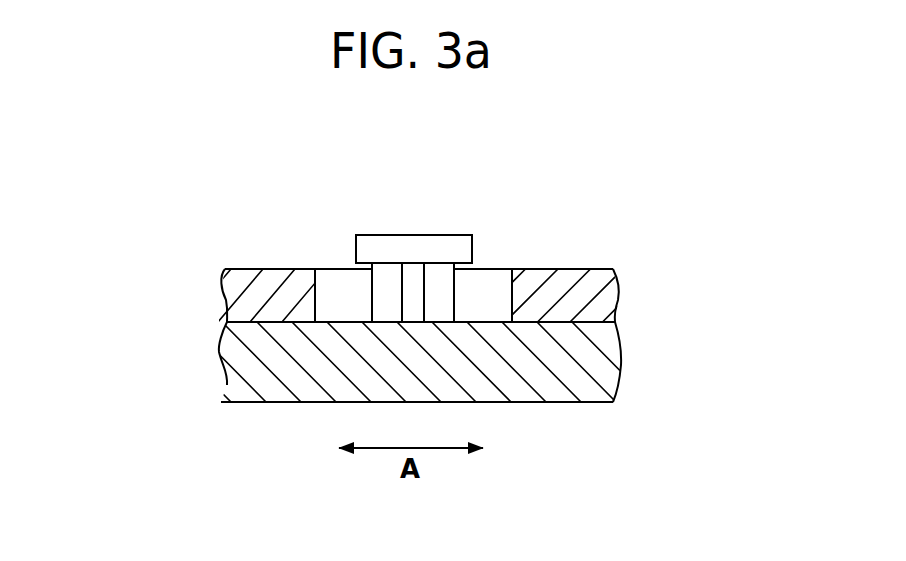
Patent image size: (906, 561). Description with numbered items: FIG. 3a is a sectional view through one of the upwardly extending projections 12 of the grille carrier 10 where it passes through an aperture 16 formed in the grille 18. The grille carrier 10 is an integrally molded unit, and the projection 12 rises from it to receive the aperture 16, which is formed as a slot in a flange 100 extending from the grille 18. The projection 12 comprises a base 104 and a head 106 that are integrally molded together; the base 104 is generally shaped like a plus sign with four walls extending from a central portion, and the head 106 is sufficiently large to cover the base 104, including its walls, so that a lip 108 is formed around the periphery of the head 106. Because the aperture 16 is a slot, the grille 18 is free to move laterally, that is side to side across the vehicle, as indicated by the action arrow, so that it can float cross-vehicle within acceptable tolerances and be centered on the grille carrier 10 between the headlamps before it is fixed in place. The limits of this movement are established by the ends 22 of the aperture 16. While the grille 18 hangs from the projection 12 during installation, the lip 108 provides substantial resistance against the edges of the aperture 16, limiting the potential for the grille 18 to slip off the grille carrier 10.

The grille carrier 10 is at (613, 362).
The projection 12 is at (418, 234).
The aperture 16 is at (488, 268).
The grille 18 is at (617, 289).
The end 22 is at (317, 291).
The flange 100 is at (225, 295).
The base 104 is at (372, 300).
The head 106 is at (382, 237).
The lip 108 is at (468, 266).